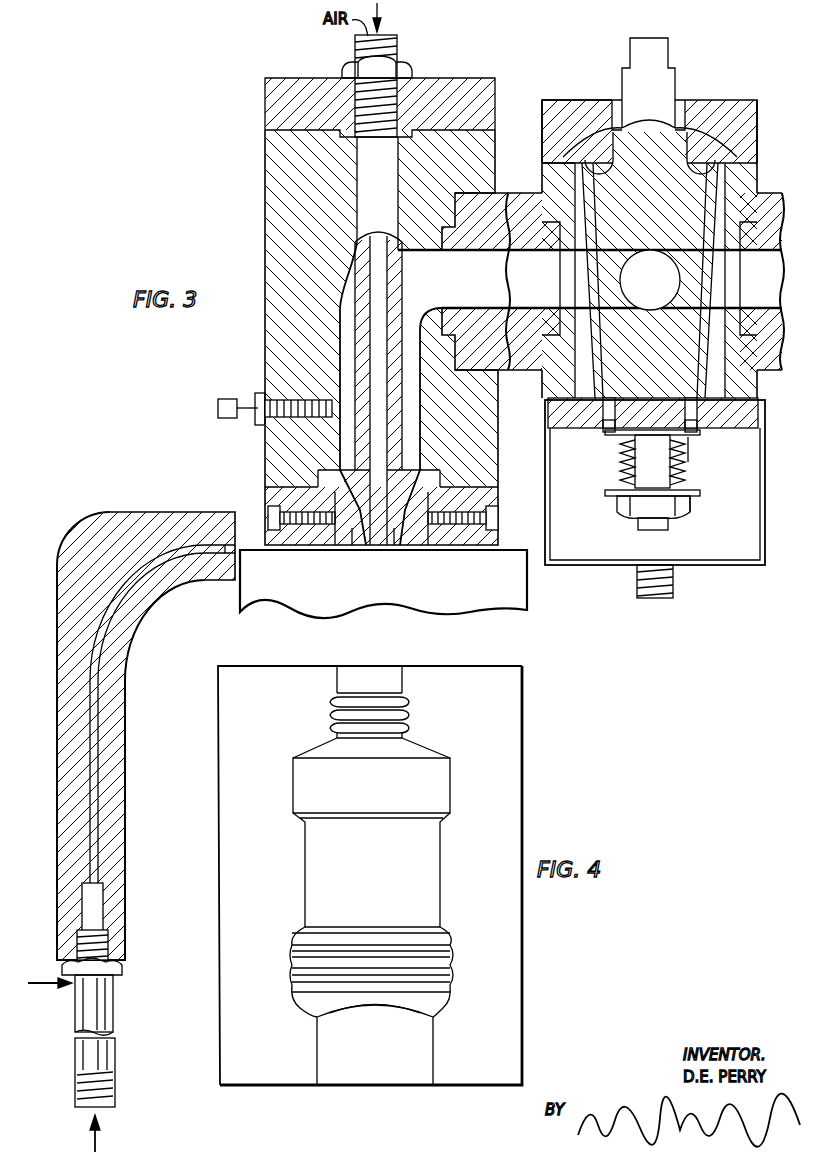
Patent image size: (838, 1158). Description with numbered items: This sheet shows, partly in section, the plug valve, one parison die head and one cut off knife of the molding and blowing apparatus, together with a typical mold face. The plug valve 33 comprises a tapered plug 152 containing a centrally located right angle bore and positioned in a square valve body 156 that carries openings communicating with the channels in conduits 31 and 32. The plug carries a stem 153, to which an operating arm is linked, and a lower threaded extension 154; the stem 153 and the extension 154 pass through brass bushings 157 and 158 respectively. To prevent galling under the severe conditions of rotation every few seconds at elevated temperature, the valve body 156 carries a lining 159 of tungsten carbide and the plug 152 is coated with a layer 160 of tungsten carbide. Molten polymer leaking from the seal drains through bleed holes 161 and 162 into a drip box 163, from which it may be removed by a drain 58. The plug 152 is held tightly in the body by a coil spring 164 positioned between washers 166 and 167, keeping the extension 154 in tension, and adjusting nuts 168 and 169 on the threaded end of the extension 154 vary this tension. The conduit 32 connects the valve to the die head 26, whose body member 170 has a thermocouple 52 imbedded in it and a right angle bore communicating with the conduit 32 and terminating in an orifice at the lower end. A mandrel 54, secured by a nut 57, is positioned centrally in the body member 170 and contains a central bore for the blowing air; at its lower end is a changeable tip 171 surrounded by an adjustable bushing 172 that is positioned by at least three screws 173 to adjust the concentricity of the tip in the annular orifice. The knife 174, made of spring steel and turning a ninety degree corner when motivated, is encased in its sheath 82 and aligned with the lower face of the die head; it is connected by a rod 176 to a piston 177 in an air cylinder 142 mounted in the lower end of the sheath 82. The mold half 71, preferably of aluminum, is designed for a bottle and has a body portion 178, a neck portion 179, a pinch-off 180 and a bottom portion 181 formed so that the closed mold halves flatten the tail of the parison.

In FIG. 3, the die head 26 is at (265, 181).
In FIG. 3, the conduit 31 is at (776, 198).
In FIG. 3, the conduit 32 is at (516, 193).
In FIG. 3, the plug valve 33 is at (734, 97).
In FIG. 3, the thermocouple 52 is at (218, 408).
In FIG. 3, the mandrel 54 is at (398, 44).
In FIG. 3, the nut 57 is at (412, 66).
In FIG. 3, the drain 58 is at (673, 596).
In FIG. 4, the mold half 71 is at (522, 716).
In FIG. 3, the sheath 82 is at (138, 512).
In FIG. 3, the air cylinder 142 is at (113, 1000).
In FIG. 3, the tapered plug 152 is at (563, 157).
In FIG. 3, the stem 153 is at (622, 76).
In FIG. 3, the lower threaded extension 154 is at (670, 462).
In FIG. 3, the valve body 156 is at (562, 104).
In FIG. 3, the brass bushing 157 is at (680, 106).
In FIG. 3, the brass bushing 158 is at (605, 437).
In FIG. 3, the lining 159 is at (758, 404).
In FIG. 3, the layer 160 is at (690, 152).
In FIG. 3, the bleed hole 161 is at (700, 432).
In FIG. 3, the bleed hole 162 is at (605, 432).
In FIG. 3, the drip box 163 is at (762, 566).
In FIG. 3, the coil spring 164 is at (626, 462).
In FIG. 3, the washer 166 is at (688, 445).
In FIG. 3, the washer 167 is at (694, 500).
In FIG. 3, the adjusting nut 168 is at (608, 496).
In FIG. 3, the adjusting nut 169 is at (620, 512).
In FIG. 3, the body member 170 is at (293, 78).
In FIG. 3, the changeable tip 171 is at (394, 547).
In FIG. 3, the adjustable bushing 172 is at (352, 547).
In FIG. 3, the screws 173 is at (268, 510).
In FIG. 3, the knife 174 is at (216, 540).
In FIG. 3, the rod 176 is at (103, 920).
In FIG. 3, the piston 177 is at (108, 1082).
In FIG. 4, the body portion 178 is at (450, 803).
In FIG. 4, the neck portion 179 is at (405, 713).
In FIG. 4, the pinch-off 180 is at (402, 1010).
In FIG. 4, the bottom portion 181 is at (433, 1045).